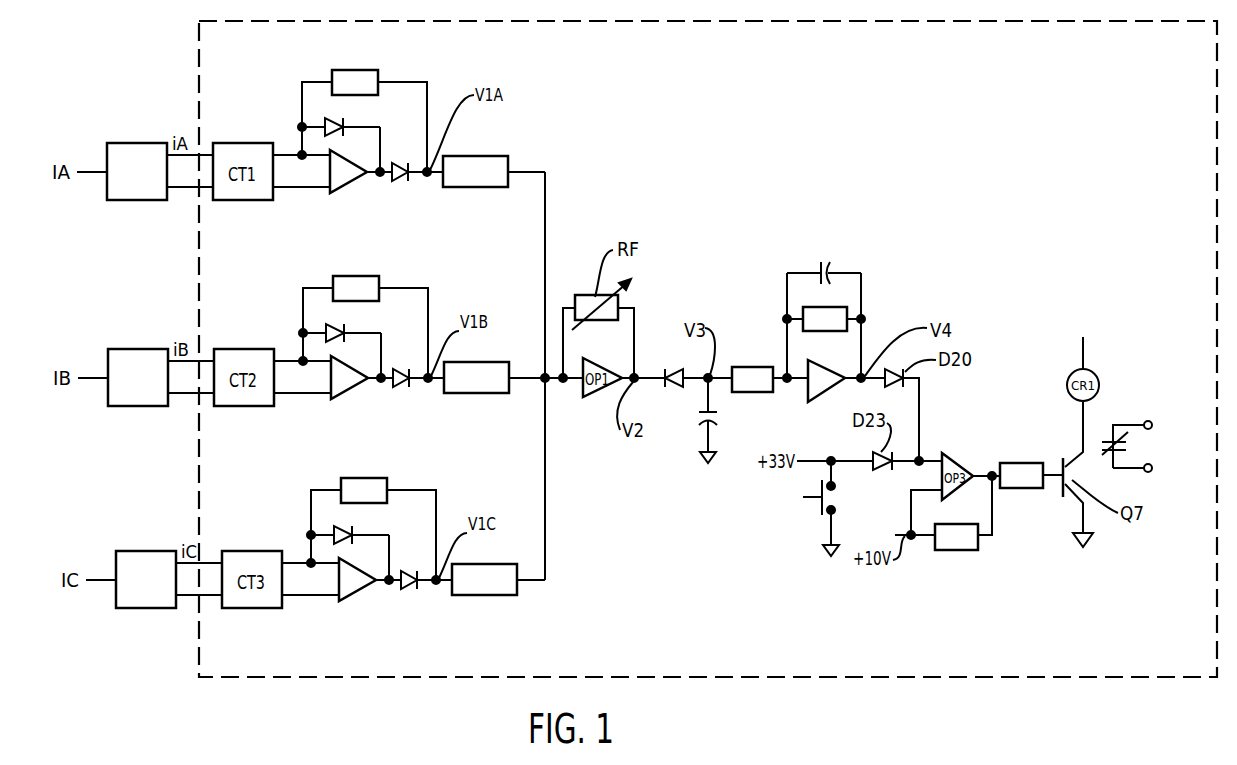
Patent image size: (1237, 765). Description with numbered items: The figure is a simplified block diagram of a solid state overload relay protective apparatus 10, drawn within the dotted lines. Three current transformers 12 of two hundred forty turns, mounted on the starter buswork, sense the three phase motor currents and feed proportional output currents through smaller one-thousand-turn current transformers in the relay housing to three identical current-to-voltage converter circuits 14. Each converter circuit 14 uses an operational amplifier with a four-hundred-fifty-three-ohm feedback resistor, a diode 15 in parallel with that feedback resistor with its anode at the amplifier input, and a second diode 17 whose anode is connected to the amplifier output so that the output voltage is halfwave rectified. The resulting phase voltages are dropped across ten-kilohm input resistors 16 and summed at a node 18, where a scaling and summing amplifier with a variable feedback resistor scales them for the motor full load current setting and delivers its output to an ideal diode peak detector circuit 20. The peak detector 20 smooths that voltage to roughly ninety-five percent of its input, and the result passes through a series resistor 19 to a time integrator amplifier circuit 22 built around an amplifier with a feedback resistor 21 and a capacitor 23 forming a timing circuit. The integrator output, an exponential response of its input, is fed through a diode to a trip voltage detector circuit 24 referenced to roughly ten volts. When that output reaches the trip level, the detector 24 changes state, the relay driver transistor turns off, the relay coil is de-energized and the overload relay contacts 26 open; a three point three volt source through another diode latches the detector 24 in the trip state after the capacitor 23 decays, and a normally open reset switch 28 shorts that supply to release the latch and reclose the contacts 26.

The solid state overload relay protective apparatus 10 is at (692, 21).
The current transformer 12 is at (125, 147).
The current-to-voltage converter circuit 14 is at (410, 56).
The diode 15 is at (343, 122).
The 10 K-ohm input resistor 16 is at (497, 162).
The second diode 17 is at (398, 180).
The node 18 is at (548, 382).
The series resistor 19 is at (750, 393).
The ideal diode peak detector circuit 20 is at (686, 417).
The feedback resistor 21 is at (840, 308).
The time integrator amplifier circuit 22 is at (847, 356).
The capacitor 23 is at (821, 268).
The trip voltage detector circuit 24 is at (1027, 454).
The overload relay contacts 26 is at (1130, 445).
The reset switch 28 is at (812, 487).